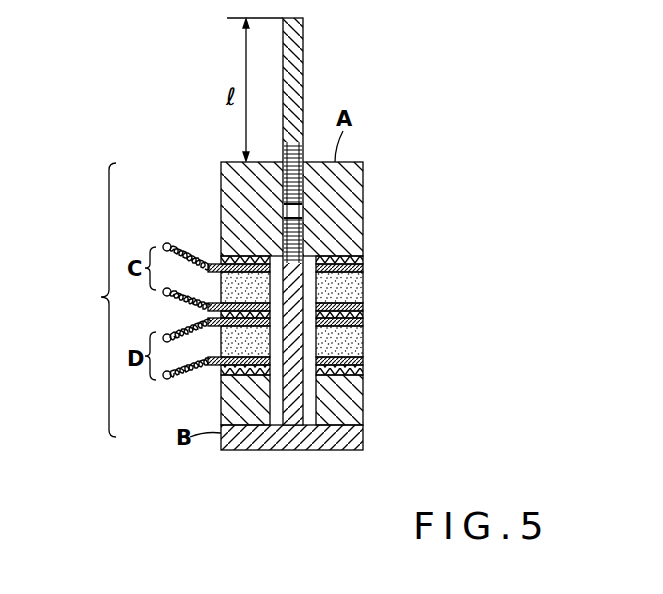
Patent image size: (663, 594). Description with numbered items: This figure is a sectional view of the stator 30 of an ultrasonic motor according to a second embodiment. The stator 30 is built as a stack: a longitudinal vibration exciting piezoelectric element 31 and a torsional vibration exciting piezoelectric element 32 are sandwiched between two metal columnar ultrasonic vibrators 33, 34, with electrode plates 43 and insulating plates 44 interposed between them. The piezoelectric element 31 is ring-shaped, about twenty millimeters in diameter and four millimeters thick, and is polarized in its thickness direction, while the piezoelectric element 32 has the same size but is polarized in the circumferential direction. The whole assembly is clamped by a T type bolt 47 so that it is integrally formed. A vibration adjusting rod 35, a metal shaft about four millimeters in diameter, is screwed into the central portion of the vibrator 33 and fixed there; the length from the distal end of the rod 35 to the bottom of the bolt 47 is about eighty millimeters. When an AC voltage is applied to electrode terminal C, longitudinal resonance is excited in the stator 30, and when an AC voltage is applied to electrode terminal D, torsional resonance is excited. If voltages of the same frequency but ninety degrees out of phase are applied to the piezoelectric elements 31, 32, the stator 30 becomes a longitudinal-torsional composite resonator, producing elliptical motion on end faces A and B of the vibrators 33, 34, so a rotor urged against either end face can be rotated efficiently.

The stator 30 is at (95, 300).
The longitudinal vibration exciting piezoelectric element 31 is at (356, 286).
The torsional vibration exciting piezoelectric element 32 is at (356, 342).
The columnar ultrasonic vibrator 33 is at (358, 190).
The columnar ultrasonic vibrator 34 is at (352, 404).
The vibration adjusting rod 35 is at (293, 33).
The electrode plate 43 is at (356, 268).
The insulating plate 44 is at (350, 260).
The T type bolt 47 is at (343, 440).